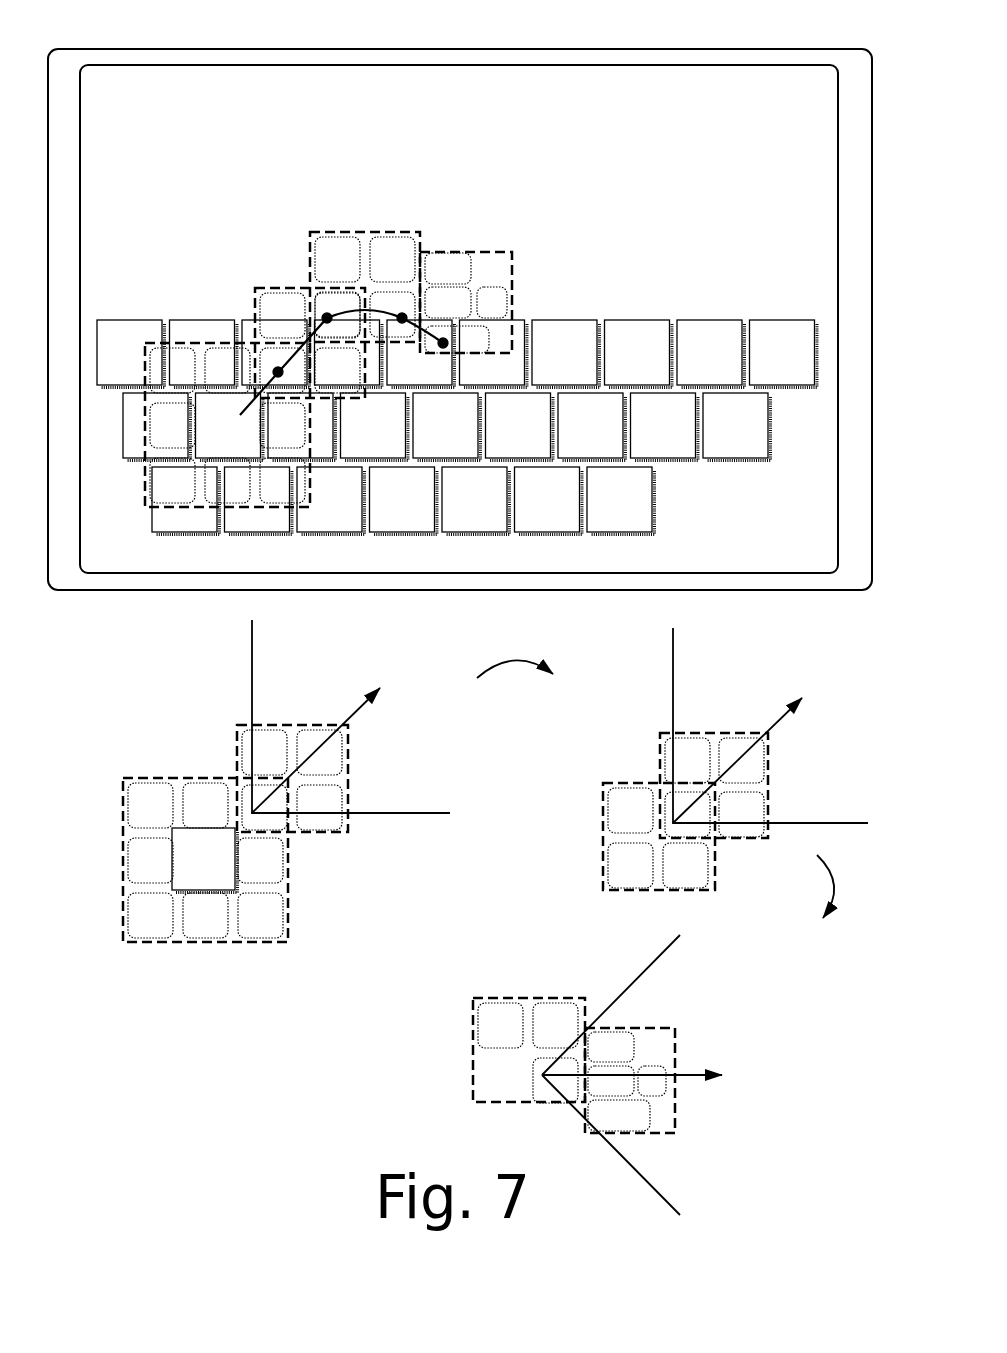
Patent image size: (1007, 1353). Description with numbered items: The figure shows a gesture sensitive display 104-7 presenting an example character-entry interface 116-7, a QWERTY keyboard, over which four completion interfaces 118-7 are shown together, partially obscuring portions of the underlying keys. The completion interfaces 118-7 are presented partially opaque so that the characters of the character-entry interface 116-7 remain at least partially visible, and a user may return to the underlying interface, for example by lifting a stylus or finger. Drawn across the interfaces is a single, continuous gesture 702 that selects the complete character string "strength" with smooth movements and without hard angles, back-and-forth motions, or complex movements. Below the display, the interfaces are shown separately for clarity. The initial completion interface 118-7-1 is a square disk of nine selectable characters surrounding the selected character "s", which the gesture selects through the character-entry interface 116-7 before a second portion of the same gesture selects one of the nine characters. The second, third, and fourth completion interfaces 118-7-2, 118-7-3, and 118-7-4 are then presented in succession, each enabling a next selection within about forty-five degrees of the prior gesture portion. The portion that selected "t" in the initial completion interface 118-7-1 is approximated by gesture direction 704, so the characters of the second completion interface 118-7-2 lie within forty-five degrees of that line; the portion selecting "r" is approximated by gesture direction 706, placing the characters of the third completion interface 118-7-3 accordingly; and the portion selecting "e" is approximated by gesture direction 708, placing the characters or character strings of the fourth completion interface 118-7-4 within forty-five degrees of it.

The gesture sensitive display 104-7 is at (454, 298).
The character-entry interface 116-7 is at (457, 382).
The completion interfaces 118-7 is at (328, 338).
The single, continuous gesture 702 is at (319, 336).
The initial completion interface 118-7-1 is at (150, 833).
The second completion interface 118-7-2 is at (410, 785).
The third completion interface 118-7-3 is at (555, 908).
The fourth completion interface 118-7-4 is at (693, 1060).
The gesture direction 704 is at (351, 716).
The gesture direction 706 is at (770, 725).
The gesture direction 708 is at (660, 1075).